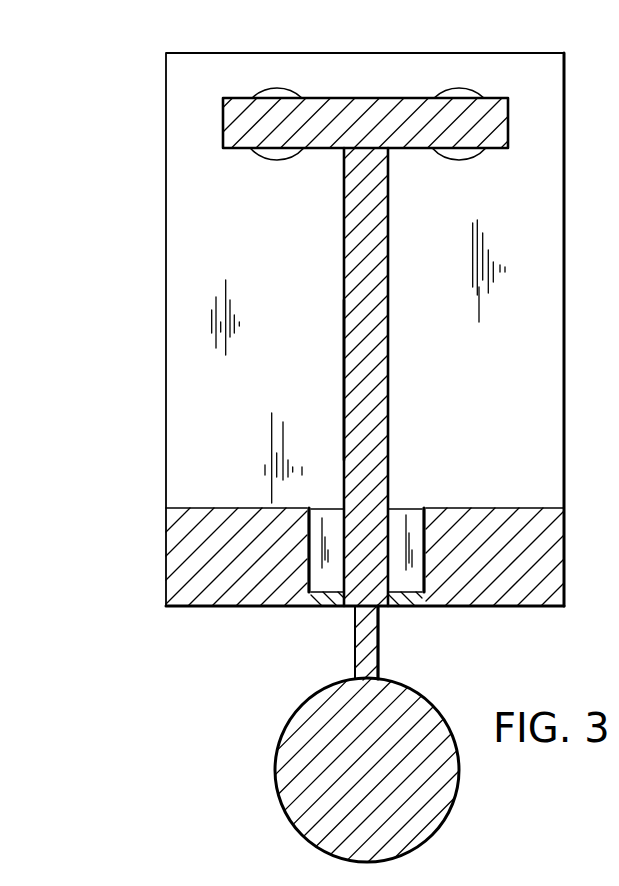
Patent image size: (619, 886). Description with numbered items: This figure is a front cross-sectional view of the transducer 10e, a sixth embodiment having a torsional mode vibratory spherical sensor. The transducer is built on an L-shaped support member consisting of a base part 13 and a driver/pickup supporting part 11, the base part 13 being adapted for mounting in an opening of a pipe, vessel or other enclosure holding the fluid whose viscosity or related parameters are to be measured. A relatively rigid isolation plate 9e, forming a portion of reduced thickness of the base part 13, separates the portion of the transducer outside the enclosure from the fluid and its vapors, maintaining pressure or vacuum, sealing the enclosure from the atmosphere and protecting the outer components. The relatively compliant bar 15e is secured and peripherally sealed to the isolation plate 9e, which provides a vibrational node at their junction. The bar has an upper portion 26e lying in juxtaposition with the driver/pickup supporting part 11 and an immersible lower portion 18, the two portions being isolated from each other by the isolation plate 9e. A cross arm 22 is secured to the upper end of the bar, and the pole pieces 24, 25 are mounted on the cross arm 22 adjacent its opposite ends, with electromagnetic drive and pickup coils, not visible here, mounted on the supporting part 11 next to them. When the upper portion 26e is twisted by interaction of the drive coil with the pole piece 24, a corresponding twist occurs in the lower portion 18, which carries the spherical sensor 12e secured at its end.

The transducer 10e is at (70, 243).
The driver/pickup supporting part 11 is at (565, 433).
The base part 13 is at (565, 566).
The isolation plate 9e is at (413, 607).
The bar 15e is at (390, 336).
The upper portion of bar 26e is at (343, 381).
The lower portion of bar 18 is at (354, 654).
The sensor 12e is at (461, 784).
The cross arm 22 is at (508, 131).
The pole piece 24 is at (462, 88).
The pole piece 25 is at (252, 98).